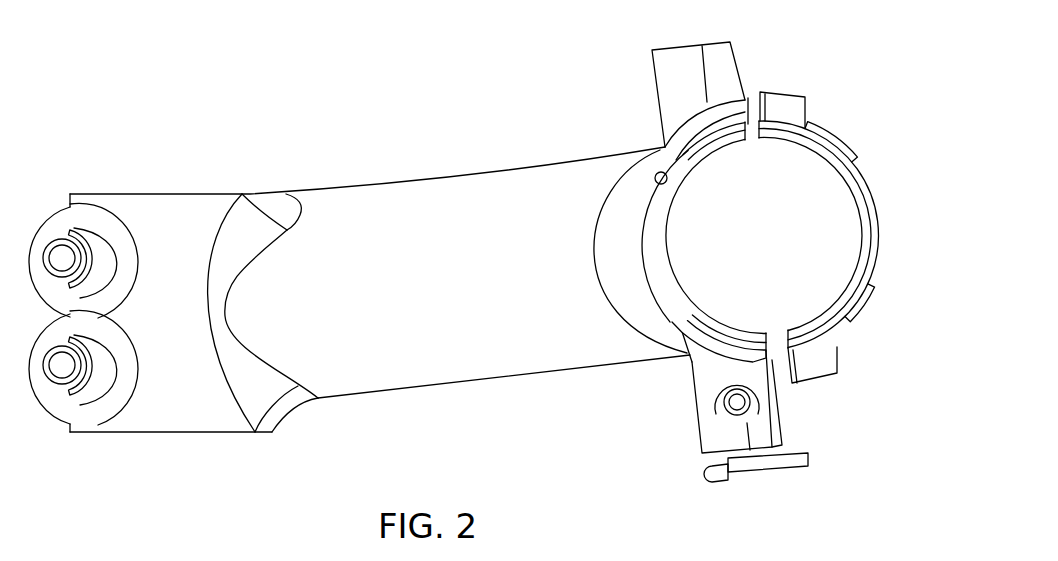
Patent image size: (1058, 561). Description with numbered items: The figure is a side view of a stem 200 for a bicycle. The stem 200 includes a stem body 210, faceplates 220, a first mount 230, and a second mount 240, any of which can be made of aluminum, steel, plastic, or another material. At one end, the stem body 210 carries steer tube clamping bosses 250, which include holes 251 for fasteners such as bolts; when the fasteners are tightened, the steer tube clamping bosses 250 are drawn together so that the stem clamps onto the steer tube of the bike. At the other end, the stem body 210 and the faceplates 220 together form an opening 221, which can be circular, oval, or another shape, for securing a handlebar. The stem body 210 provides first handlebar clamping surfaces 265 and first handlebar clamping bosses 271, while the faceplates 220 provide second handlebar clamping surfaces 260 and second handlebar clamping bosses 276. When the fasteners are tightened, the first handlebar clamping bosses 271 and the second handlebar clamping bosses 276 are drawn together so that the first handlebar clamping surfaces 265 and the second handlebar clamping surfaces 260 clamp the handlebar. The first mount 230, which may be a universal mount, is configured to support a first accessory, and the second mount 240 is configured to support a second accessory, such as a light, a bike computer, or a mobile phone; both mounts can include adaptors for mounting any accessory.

The stem 200 is at (133, 80).
The stem body 210 is at (437, 230).
The faceplates 220 is at (842, 142).
The opening 221 is at (797, 268).
The first mount 230 is at (677, 90).
The second mount 240 is at (710, 425).
The steer tube clamping bosses 250 is at (70, 242).
The holes 251 is at (63, 365).
The second handlebar clamping surfaces 260 is at (845, 193).
The first handlebar clamping surfaces 265 is at (672, 257).
The first handlebar clamping bosses 271 is at (693, 125).
The second handlebar clamping bosses 276 is at (788, 108).